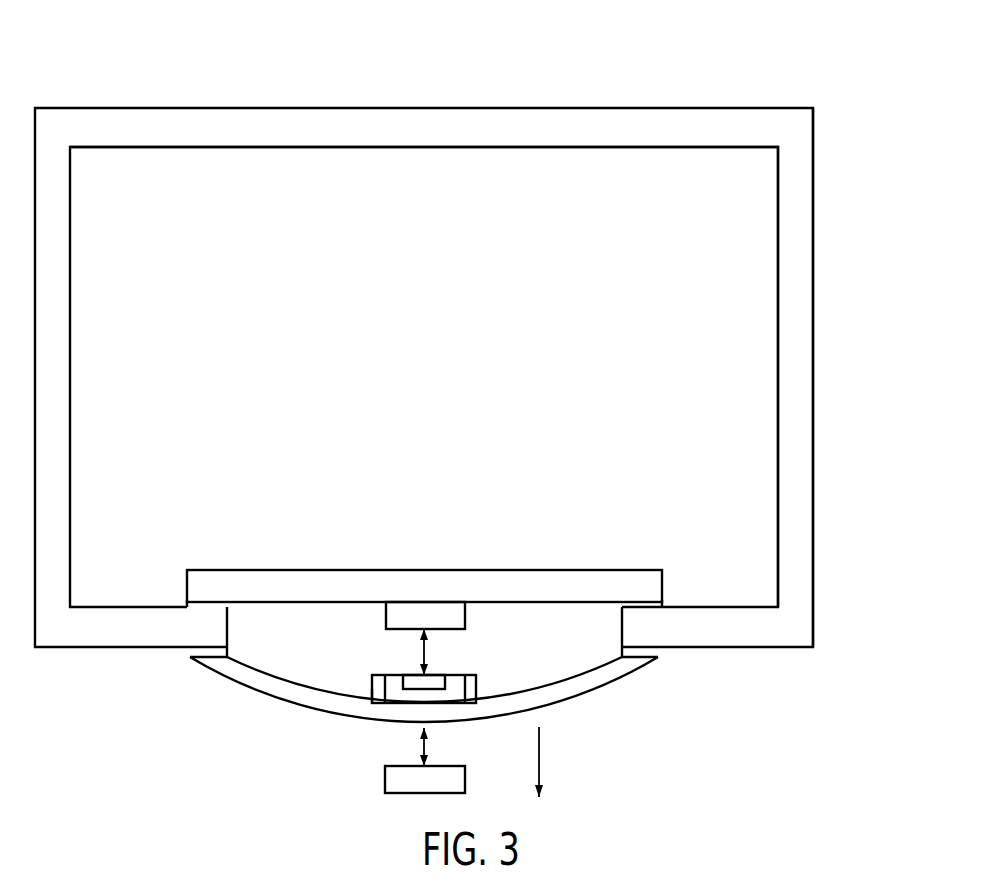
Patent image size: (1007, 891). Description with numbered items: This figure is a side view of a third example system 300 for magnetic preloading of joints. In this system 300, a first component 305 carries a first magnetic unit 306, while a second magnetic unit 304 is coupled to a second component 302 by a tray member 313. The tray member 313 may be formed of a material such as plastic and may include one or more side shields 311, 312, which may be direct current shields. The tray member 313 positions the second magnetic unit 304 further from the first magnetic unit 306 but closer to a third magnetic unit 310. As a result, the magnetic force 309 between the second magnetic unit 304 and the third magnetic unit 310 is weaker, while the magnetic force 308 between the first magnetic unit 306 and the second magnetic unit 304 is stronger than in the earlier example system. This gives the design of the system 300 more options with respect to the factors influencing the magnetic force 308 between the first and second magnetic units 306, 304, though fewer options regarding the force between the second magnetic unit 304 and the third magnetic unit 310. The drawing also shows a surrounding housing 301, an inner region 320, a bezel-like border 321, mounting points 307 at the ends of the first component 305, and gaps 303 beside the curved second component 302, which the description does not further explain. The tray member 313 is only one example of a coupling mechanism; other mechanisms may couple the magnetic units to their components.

The system 300 is at (588, 76).
The housing 301 is at (815, 524).
The second component 302 is at (598, 692).
The gap 303 is at (183, 658).
The second magnetic unit 304 is at (445, 680).
The first component 305 is at (617, 580).
The first magnetic unit 306 is at (386, 613).
The mounting point 307 is at (182, 598).
The magnetic force 308 is at (421, 655).
The magnetic force 309 is at (421, 745).
The third magnetic unit 310 is at (465, 770).
The side shield 311 is at (373, 689).
The side shield 312 is at (472, 696).
The tray member 313 is at (393, 681).
The display 320 is at (760, 441).
The bezel 321 is at (803, 263).